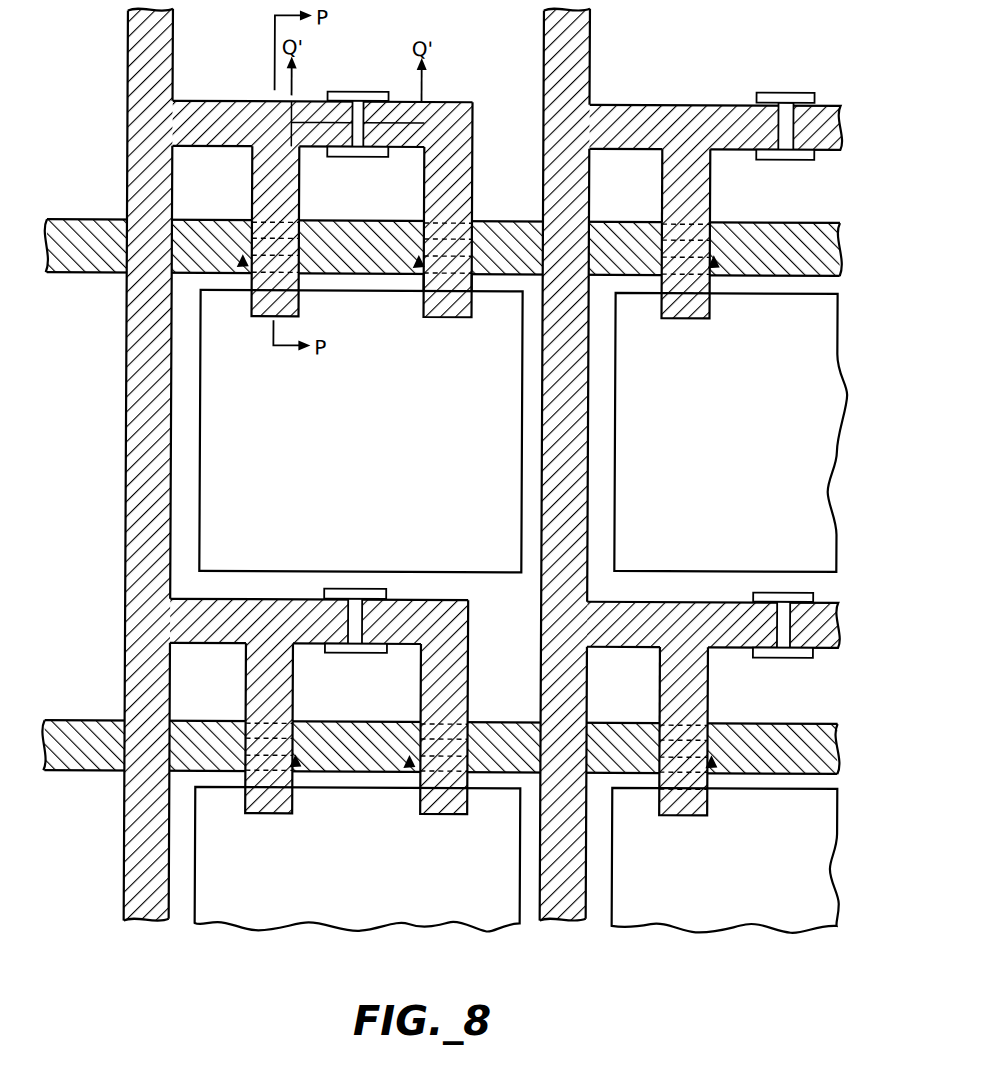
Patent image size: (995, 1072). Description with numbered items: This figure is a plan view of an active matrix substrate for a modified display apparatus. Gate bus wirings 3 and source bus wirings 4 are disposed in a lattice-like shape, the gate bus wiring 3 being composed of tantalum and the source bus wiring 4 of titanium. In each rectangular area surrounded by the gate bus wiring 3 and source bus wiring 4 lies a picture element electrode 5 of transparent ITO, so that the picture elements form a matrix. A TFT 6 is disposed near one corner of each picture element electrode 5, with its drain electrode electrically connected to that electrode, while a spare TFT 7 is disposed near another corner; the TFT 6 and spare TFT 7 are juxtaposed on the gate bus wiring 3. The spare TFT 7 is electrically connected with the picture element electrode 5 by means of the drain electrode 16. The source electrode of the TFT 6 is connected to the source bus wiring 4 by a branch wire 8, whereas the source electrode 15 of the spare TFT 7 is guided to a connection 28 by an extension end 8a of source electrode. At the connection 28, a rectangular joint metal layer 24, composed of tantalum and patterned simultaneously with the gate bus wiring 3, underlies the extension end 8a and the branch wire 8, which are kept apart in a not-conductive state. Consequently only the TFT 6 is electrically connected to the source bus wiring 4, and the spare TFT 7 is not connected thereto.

The gate bus wiring 3 is at (47, 229).
The source bus wiring 4 is at (176, 32).
The picture element electrode 5 is at (352, 452).
The TFT 6 is at (244, 265).
The spare TFT 7 is at (419, 265).
The branch wire 8 is at (201, 113).
The extension end of source electrode 8a is at (438, 106).
The source electrode of spare TFT 15 is at (251, 177).
The drain electrode 16 is at (445, 318).
The joint metal layer 24 is at (355, 88).
The connection 28 is at (340, 82).